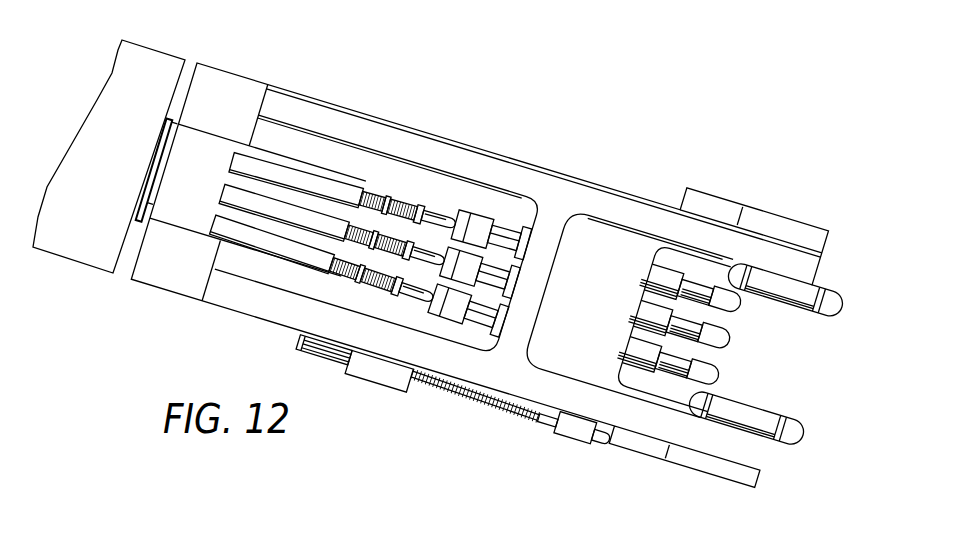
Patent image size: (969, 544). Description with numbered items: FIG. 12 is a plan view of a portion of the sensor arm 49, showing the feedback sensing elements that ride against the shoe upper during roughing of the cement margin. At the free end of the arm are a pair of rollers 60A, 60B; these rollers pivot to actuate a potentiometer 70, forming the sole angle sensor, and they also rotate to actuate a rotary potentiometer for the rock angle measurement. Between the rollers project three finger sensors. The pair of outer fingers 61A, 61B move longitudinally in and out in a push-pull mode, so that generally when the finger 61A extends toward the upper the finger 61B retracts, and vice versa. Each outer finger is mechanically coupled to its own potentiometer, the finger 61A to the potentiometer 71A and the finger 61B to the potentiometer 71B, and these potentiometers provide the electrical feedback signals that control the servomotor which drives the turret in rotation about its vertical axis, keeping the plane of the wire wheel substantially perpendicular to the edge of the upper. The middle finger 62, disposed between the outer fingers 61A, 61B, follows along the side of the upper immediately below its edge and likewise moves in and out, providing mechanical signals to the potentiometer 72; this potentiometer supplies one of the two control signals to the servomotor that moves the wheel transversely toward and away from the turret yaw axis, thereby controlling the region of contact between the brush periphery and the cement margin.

The sensor arm 49 is at (460, 136).
The potentiometer 70 is at (332, 363).
The potentiometer 71A is at (216, 224).
The potentiometer 71B is at (247, 152).
The potentiometer 72 is at (226, 193).
The roller 60A is at (758, 418).
The roller 60B is at (787, 285).
The outer finger 61A is at (717, 378).
The outer finger 61B is at (733, 303).
The middle finger 62 is at (733, 343).